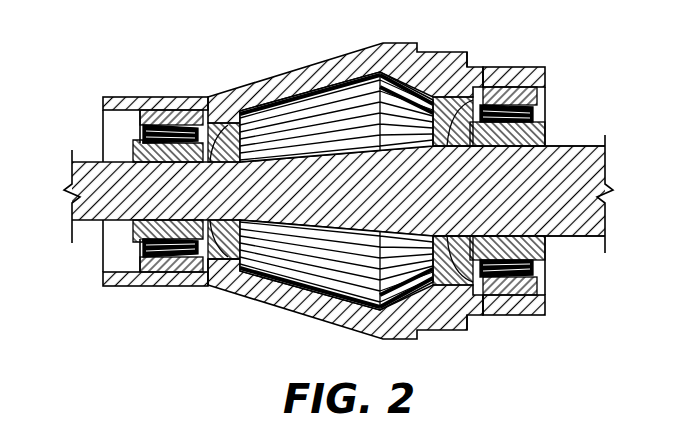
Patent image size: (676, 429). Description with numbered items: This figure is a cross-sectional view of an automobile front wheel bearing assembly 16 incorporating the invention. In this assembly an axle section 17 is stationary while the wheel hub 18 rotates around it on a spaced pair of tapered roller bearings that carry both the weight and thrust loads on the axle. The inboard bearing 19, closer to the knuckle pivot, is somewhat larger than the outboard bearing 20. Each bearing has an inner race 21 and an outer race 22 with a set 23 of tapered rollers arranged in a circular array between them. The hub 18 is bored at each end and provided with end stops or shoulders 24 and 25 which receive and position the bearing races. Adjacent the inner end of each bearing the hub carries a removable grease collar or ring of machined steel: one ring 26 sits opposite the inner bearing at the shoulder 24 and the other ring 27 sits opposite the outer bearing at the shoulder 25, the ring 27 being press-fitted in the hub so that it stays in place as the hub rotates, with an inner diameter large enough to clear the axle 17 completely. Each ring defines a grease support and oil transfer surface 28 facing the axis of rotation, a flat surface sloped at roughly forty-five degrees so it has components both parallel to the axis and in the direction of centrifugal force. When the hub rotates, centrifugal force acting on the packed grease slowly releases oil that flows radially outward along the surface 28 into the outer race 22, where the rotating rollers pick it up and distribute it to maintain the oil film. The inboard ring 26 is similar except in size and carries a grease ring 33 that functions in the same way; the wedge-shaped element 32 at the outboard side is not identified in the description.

The front wheel bearing assembly 16 is at (512, 64).
The axle section 17 is at (585, 144).
The wheel hub 18 is at (289, 83).
The inboard bearing 19 is at (549, 94).
The outboard bearing 20 is at (103, 127).
The inner race 21 is at (334, 194).
The outer race 22 is at (160, 110).
The set of tapered rollers 23 is at (143, 252).
The shoulder 24 is at (482, 68).
The shoulder 25 is at (189, 110).
The grease collar or ring 26 is at (392, 70).
The grease collar or ring 27 is at (266, 112).
The grease support and oil transfer surface 28 is at (222, 284).
The wedge ring 32 is at (222, 224).
The grease ring 33 is at (463, 118).